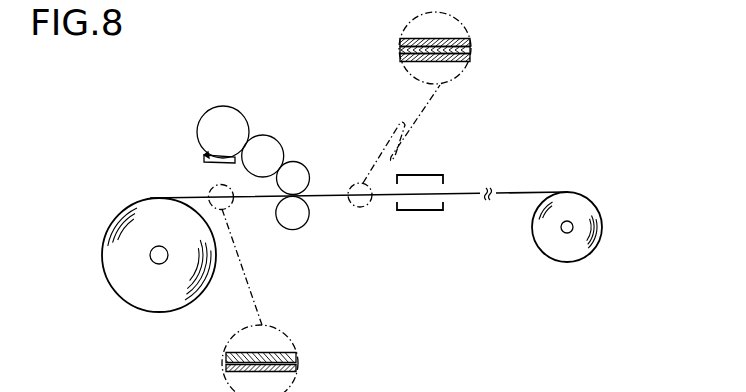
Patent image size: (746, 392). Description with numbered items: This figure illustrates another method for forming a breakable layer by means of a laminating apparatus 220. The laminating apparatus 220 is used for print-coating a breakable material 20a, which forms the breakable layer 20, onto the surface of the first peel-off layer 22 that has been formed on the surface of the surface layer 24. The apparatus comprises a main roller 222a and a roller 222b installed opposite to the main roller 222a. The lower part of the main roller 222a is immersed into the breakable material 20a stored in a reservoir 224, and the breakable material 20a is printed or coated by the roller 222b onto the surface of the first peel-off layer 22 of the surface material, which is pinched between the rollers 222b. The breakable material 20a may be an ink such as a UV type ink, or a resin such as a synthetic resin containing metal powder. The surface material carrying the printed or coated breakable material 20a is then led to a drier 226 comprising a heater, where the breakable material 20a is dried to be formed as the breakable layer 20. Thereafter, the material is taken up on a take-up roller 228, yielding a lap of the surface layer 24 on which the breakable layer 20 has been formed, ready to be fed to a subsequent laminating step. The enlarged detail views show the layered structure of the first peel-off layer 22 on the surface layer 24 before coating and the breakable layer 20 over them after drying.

The laminating apparatus 220 is at (361, 46).
The main roller 222a is at (233, 108).
The roller 222b is at (295, 180).
The breakable material 20a is at (203, 154).
The reservoir 224 is at (218, 165).
The drier 226 is at (421, 211).
The take-up roller 228 is at (565, 233).
The breakable layer 20 is at (470, 42).
The first peel-off layer 22 is at (471, 50).
The surface layer 24 is at (465, 62).